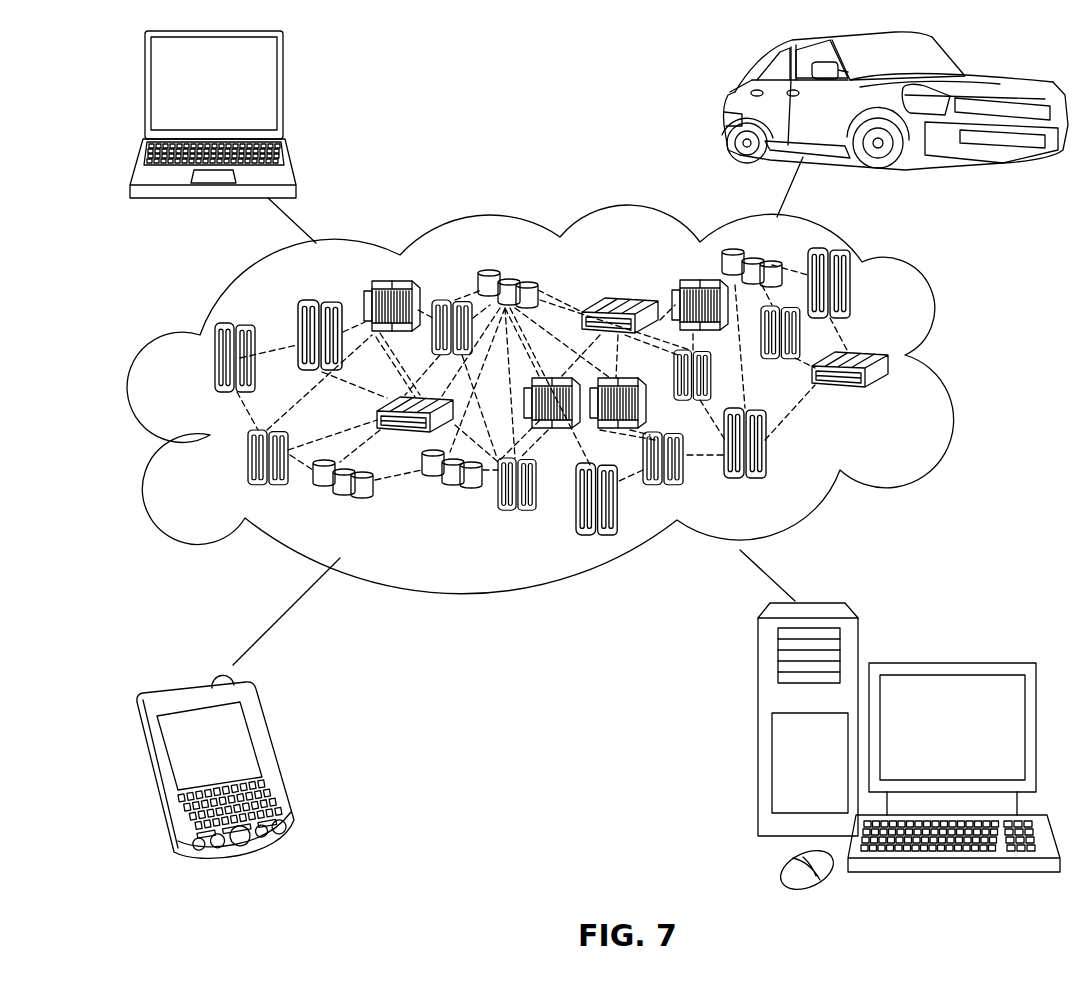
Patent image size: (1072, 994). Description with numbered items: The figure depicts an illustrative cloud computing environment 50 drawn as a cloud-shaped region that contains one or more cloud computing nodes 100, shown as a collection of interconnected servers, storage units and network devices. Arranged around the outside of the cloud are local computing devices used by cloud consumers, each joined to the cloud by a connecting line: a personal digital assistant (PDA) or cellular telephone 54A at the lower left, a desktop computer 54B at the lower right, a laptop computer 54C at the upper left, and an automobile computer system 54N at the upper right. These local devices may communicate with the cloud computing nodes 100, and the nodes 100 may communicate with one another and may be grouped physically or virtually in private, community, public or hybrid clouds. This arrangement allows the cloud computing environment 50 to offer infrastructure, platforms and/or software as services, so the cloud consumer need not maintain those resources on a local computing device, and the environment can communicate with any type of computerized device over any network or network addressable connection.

The laptop computer 54C is at (283, 93).
The automobile computer system 54N is at (727, 108).
The personal digital assistant (PDA) or cellular telephone 54A is at (272, 757).
The desktop computer 54B is at (948, 660).
The cloud computing environment 50 is at (952, 366).
The cloud computing nodes 100 is at (889, 400).